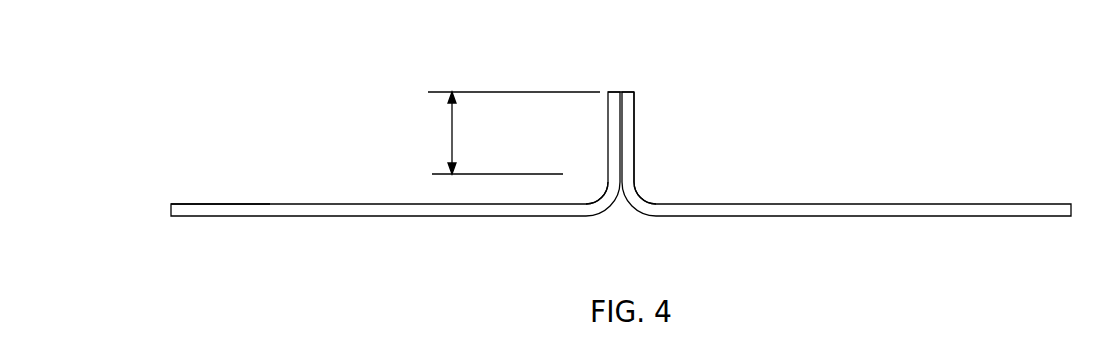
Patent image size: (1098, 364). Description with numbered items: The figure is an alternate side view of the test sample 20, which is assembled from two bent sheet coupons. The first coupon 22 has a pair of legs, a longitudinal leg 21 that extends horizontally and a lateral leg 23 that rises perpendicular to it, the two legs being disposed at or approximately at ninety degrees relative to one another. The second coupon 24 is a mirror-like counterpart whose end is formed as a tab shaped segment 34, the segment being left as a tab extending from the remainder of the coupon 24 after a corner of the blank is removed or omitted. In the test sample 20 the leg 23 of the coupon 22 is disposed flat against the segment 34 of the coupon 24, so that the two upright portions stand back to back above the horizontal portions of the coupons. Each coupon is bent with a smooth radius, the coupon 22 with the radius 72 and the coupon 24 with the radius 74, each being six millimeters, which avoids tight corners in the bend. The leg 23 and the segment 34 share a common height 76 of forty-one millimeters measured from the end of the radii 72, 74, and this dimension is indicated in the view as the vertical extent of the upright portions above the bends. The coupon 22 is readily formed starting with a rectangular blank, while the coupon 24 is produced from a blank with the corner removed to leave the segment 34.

The test sample 20 is at (790, 95).
The longitudinal leg 21 is at (352, 218).
The coupon 22 is at (205, 196).
The lateral leg 23 is at (611, 90).
The coupon 24 is at (968, 193).
The segment 34 is at (635, 117).
The radius 72 is at (600, 193).
The radius 74 is at (640, 195).
The height 76 is at (452, 130).